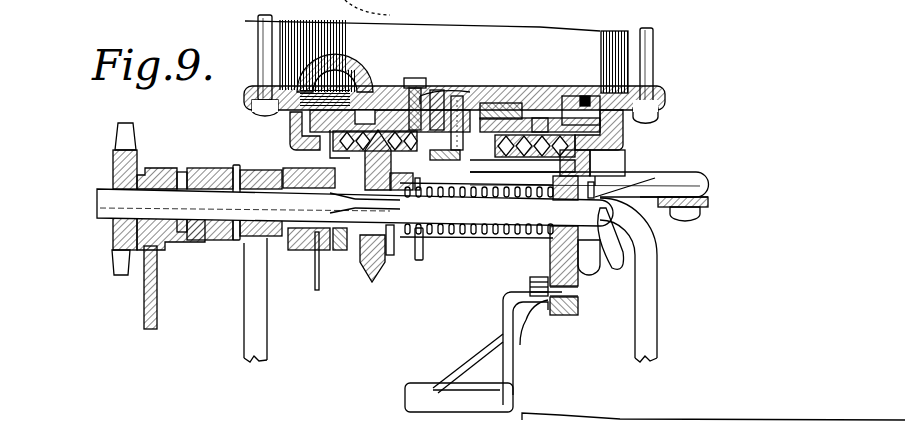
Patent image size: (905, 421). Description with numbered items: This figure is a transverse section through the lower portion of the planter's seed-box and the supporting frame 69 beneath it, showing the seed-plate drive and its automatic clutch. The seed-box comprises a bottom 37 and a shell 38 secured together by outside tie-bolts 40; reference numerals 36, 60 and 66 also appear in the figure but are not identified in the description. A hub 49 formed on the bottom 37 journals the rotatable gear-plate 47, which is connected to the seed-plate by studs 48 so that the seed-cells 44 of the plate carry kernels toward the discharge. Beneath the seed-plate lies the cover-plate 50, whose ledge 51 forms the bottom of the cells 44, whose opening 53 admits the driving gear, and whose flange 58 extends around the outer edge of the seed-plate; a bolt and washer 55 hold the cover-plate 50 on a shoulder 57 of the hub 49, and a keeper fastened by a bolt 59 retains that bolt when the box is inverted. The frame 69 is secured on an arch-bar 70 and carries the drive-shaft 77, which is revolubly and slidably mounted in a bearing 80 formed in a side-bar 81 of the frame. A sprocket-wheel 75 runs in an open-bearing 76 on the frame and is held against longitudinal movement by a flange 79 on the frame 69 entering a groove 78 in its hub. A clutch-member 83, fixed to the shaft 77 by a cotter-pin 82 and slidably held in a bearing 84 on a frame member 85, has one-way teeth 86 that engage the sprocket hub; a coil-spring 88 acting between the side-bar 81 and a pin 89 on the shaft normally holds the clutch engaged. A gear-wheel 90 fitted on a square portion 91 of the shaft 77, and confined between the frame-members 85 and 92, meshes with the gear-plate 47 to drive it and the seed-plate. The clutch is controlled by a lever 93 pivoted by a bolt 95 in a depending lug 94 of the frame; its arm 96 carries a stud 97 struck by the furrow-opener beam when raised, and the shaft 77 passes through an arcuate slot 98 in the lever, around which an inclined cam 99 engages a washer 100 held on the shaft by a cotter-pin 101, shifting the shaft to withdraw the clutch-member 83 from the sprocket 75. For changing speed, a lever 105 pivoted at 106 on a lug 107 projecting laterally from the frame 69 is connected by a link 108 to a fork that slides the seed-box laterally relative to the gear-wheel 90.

The cylindrical housing 36 is at (470, 29).
The bottom 37 is at (246, 90).
The shell 38 is at (280, 32).
The tie-bolts 40 is at (262, 50).
The seed-cells 44 is at (610, 110).
The gear-plate 47 is at (530, 122).
The studs 48 is at (373, 94).
The hub 49 is at (479, 118).
The cover-plate 50 is at (598, 166).
The ledge 51 is at (312, 152).
The opening 53 is at (340, 250).
The washer 55 is at (470, 168).
The shoulder 57 is at (433, 92).
The flange 58 is at (290, 125).
The bolt 59 is at (410, 85).
The bearing cap 60 is at (578, 96).
The cover plate 66 is at (442, 94).
The frame 69 is at (236, 166).
The arch-bar 70 is at (262, 308).
The sprocket-wheel 75 is at (112, 224).
The open-bearing 76 is at (160, 262).
The drive-shaft 77 is at (494, 240).
The groove 78 is at (132, 232).
The flange 79 is at (298, 140).
The bearing 80 is at (548, 262).
The side-bar 81 is at (546, 196).
The cotter-pin 82 is at (236, 242).
The clutch-member 83 is at (212, 172).
The bearing 84 is at (300, 252).
The frame member 85 is at (300, 203).
The one-way teeth 86 is at (183, 172).
The coil-spring 88 is at (430, 234).
The pin 89 is at (416, 242).
The gear-wheel 90 is at (652, 76).
The square portion 91 is at (316, 286).
The frame-member 92 is at (391, 256).
The lever 93 is at (468, 363).
The depending lug 94 is at (566, 270).
The bolt 95 is at (571, 316).
The arm 96 is at (512, 372).
The stud 97 is at (418, 392).
The arcuate slot 98 is at (618, 248).
The inclined cam 99 is at (638, 236).
The washer 100 is at (592, 197).
The cotter-pin 101 is at (604, 270).
The lever 105 is at (702, 208).
The pivot 106 is at (700, 176).
The lug 107 is at (710, 190).
The link 108 is at (620, 180).